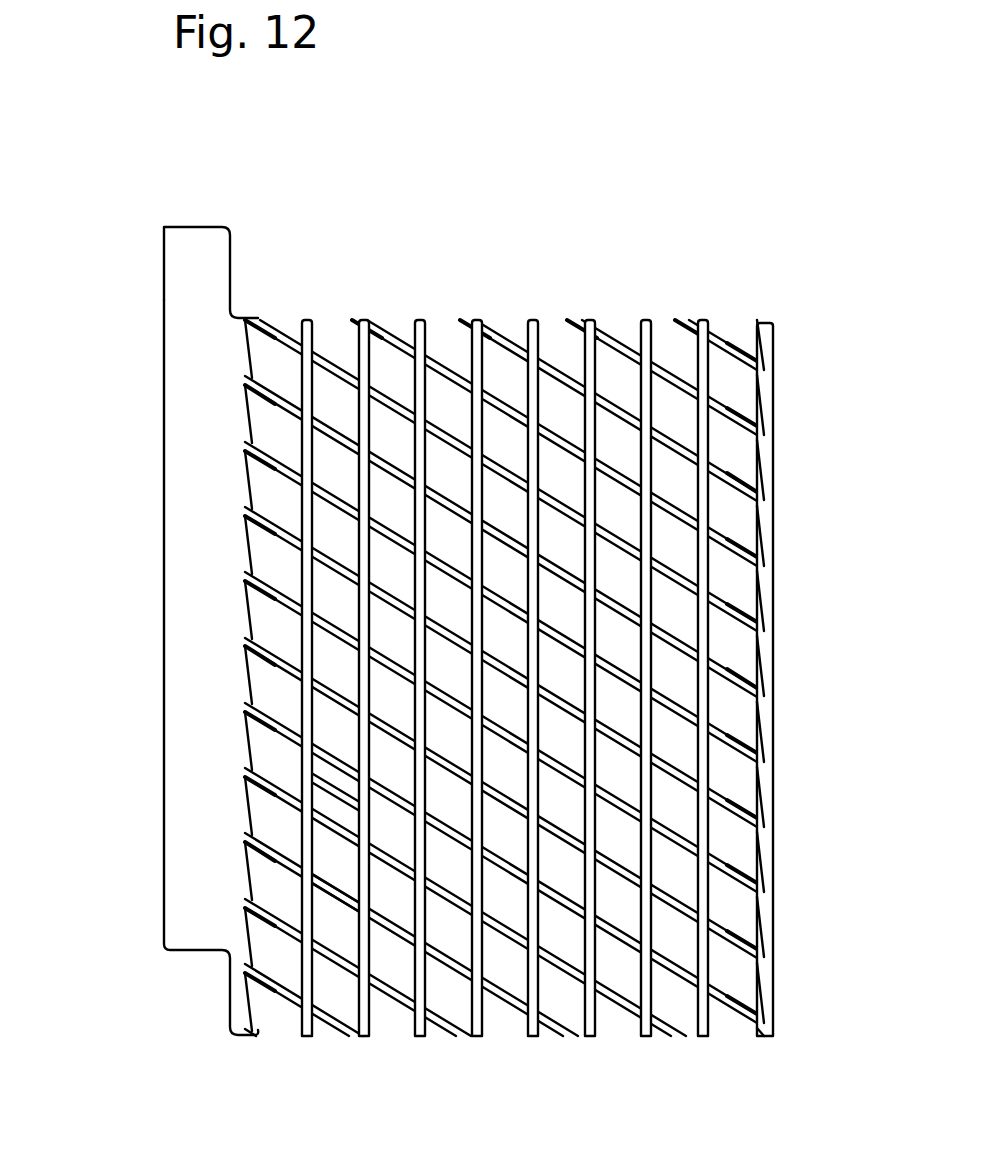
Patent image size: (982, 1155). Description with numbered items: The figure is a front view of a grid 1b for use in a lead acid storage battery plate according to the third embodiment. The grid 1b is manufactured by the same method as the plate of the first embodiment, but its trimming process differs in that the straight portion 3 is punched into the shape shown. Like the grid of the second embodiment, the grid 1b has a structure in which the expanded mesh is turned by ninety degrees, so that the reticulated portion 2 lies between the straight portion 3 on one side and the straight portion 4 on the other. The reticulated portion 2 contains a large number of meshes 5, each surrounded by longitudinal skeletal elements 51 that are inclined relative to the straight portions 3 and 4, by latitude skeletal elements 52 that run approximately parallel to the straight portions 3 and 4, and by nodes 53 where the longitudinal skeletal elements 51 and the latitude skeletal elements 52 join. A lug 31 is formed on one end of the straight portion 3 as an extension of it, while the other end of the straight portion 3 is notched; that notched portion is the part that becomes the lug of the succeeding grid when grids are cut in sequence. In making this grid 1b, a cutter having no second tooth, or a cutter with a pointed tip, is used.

The grid 1b is at (388, 257).
The reticulated portion 2 is at (504, 312).
The straight portion 3 is at (183, 526).
The lug 31 is at (190, 283).
The straight portion 4 is at (770, 463).
The mesh 5 is at (328, 922).
The longitudinal skeletal element 51 is at (355, 808).
The latitude skeletal element 52 is at (327, 758).
The node 53 is at (353, 846).